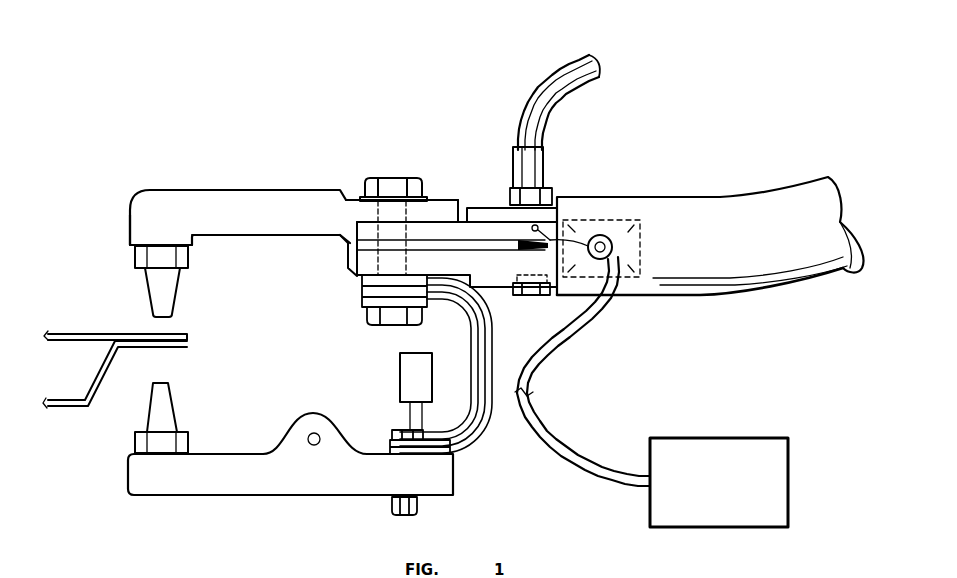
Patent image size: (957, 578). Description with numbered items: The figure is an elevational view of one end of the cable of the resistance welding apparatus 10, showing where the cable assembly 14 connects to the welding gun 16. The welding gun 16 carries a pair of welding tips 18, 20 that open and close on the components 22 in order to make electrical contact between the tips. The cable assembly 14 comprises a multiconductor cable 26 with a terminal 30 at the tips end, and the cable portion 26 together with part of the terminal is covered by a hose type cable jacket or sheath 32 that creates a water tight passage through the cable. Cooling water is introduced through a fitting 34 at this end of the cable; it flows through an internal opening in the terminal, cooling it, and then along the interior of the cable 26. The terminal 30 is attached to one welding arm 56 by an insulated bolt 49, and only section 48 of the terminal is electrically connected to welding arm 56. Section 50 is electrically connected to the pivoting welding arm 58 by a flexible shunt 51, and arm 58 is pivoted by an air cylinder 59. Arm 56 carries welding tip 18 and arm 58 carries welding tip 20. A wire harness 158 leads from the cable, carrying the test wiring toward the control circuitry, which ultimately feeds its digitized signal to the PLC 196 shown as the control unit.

The resistance welding apparatus 10 is at (269, 495).
The cable assembly 14 is at (710, 227).
The welding gun 16 is at (293, 188).
The welding tip 18 is at (155, 300).
The welding tip 20 is at (153, 400).
The components 22 is at (175, 333).
The multiconductor cable 26 is at (767, 265).
The terminal 30 is at (493, 200).
The cable jacket or sheath 32 is at (707, 297).
The fitting 34 is at (557, 167).
The section 48 is at (466, 205).
The insulated bolt 49 is at (392, 185).
The section 50 is at (487, 282).
The flexible shunt 51 is at (472, 432).
The welding arm 56 is at (220, 200).
The pivoting welding arm 58 is at (218, 484).
The air cylinder 59 is at (410, 372).
The wire harness 158 is at (567, 360).
The PLC 196 is at (790, 493).